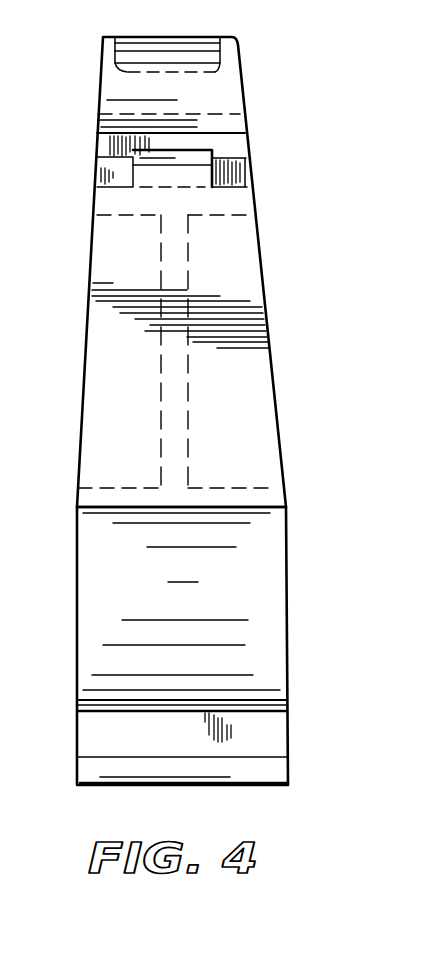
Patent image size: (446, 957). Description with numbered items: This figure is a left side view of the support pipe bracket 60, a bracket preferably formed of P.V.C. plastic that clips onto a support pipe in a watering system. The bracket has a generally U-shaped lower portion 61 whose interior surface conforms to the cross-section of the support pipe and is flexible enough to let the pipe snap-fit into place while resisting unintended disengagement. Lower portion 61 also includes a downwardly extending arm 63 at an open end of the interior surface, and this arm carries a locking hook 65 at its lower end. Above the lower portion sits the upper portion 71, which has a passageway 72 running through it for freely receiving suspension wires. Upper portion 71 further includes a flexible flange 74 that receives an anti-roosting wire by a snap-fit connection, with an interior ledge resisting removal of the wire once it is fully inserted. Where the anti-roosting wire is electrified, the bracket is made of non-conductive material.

The support pipe bracket 60 is at (80, 346).
The lower portion 61 is at (78, 574).
The arm 63 is at (113, 735).
The locking hook 65 is at (88, 768).
The upper portion 71 is at (258, 138).
The passageway 72 is at (217, 90).
The flexible flange 74 is at (200, 173).